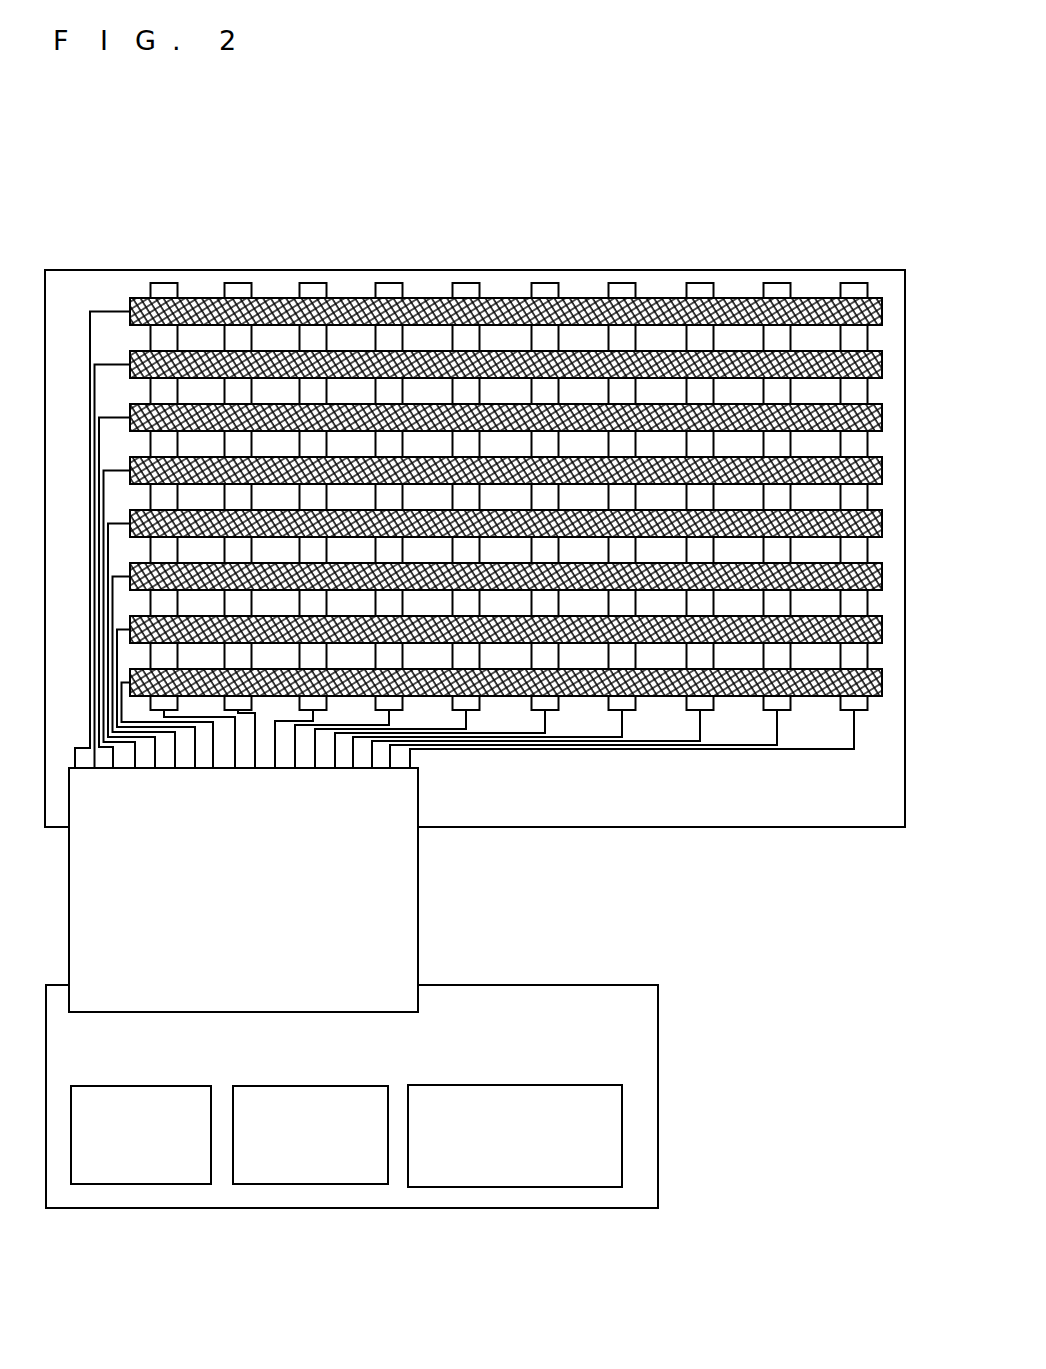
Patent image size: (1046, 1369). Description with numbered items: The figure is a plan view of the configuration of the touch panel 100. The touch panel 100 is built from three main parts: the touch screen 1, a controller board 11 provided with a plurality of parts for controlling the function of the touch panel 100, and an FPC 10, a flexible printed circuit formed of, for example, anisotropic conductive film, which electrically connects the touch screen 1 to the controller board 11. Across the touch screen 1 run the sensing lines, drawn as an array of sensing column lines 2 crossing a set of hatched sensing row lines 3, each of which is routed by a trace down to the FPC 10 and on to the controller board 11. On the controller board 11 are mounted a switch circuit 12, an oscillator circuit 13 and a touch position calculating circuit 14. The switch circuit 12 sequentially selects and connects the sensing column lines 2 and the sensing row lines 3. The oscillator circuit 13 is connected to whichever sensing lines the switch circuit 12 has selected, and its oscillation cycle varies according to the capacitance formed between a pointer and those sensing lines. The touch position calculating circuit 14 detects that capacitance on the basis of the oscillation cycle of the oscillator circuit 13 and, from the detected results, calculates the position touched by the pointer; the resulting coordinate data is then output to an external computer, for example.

The touch screen 1 is at (358, 270).
The sensing column line 2 is at (163, 290).
The sensing row line 3 is at (280, 302).
The FPC 10 is at (418, 890).
The controller board 11 is at (658, 1097).
The switch circuit 12 is at (140, 1184).
The oscillator circuit 13 is at (312, 1184).
The touch position calculating circuit 14 is at (515, 1187).
The touch panel 100 is at (475, 735).